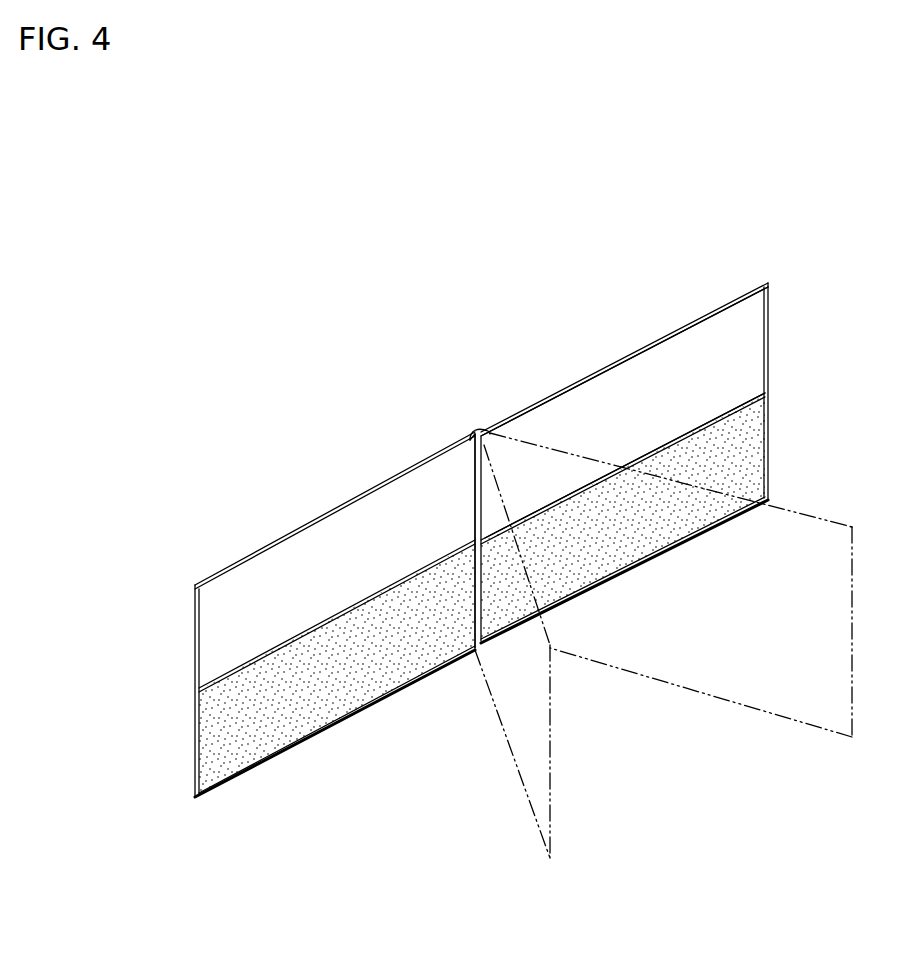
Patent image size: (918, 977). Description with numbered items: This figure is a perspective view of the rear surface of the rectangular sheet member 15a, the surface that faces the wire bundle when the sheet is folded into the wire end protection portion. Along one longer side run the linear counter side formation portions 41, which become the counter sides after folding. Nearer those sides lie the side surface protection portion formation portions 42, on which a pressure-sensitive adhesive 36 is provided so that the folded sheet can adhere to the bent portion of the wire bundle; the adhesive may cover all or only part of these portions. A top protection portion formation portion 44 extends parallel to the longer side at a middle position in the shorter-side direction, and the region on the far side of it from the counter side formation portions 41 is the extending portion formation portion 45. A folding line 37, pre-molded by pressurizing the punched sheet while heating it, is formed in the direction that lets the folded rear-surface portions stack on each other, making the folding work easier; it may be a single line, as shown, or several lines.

The sheet member 15a is at (408, 343).
The counter side formation portion 41 is at (403, 690).
The pressure-sensitive adhesive 36 is at (626, 532).
The folding line 37 is at (474, 432).
The side surface protection portion formation portion 42 is at (279, 738).
The top protection portion formation portion 44 is at (696, 426).
The extending portion formation portion 45 is at (585, 412).